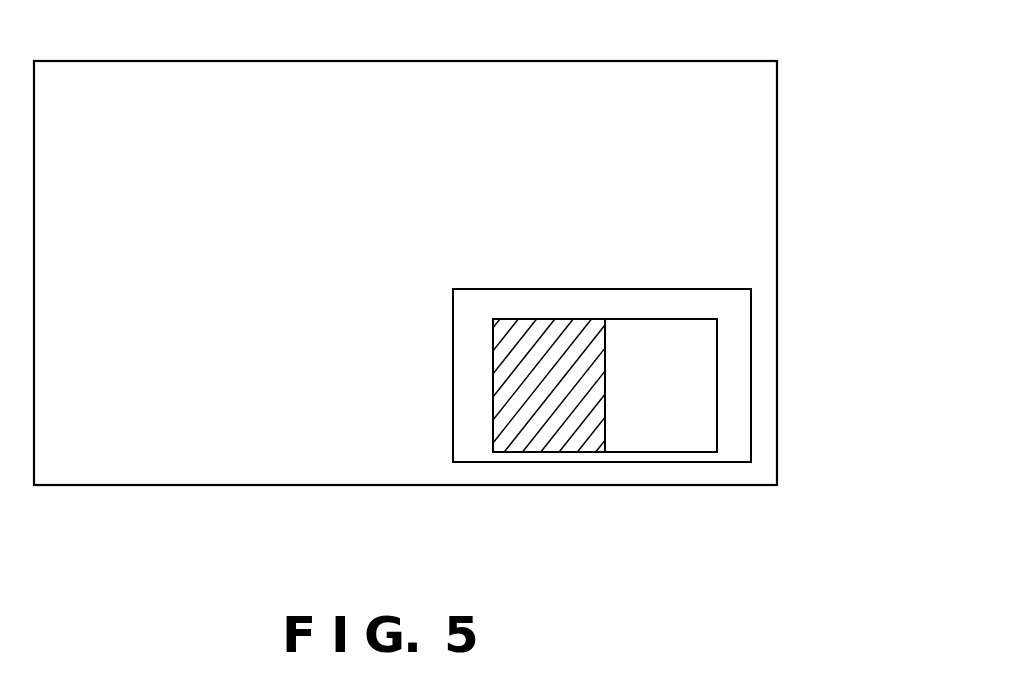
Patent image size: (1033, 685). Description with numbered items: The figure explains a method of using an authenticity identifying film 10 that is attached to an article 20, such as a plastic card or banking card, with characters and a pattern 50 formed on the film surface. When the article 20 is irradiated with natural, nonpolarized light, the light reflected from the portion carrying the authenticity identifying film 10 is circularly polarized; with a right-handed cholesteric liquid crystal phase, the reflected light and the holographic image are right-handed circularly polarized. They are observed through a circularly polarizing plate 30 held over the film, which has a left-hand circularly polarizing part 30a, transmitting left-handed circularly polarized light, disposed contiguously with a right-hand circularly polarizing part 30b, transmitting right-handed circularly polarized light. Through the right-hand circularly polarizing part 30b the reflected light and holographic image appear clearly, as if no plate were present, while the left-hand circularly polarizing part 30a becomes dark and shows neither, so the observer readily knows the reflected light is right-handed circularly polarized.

The authenticity identifying film 10 is at (713, 310).
The article 20 is at (708, 85).
The circularly polarizing plate 30 is at (722, 497).
The left-hand circularly polarizing part 30a is at (492, 447).
The right-hand circularly polarizing part 30b is at (693, 440).
The characters and a pattern 50 is at (714, 371).